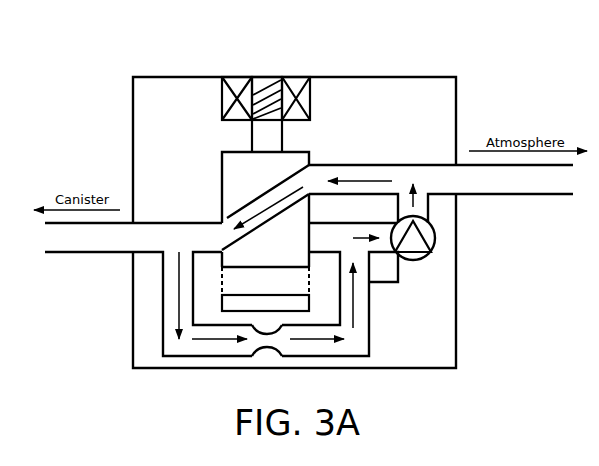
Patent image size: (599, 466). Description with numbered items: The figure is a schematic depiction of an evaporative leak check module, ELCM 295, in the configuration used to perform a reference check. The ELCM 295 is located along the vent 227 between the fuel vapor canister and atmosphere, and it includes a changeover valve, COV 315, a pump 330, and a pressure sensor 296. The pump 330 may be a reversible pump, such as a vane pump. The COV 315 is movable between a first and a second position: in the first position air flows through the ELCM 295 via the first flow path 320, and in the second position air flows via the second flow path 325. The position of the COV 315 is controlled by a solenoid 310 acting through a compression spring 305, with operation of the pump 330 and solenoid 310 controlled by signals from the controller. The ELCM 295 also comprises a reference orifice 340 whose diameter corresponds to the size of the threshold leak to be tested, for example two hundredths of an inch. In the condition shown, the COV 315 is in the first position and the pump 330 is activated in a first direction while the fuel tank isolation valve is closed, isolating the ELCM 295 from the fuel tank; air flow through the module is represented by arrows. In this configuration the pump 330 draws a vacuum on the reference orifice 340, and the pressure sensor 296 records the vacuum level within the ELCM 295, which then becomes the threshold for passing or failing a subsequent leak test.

The vent 227 is at (90, 252).
The ELCM 295 is at (165, 77).
The pressure sensor 296 is at (398, 282).
The compression spring 305 is at (267, 77).
The solenoid 310 is at (297, 77).
The changeover valve 315 is at (232, 150).
The first flow path 320 is at (272, 188).
The second flow path 325 is at (307, 267).
The pump 330 is at (430, 256).
The reference orifice 340 is at (278, 345).